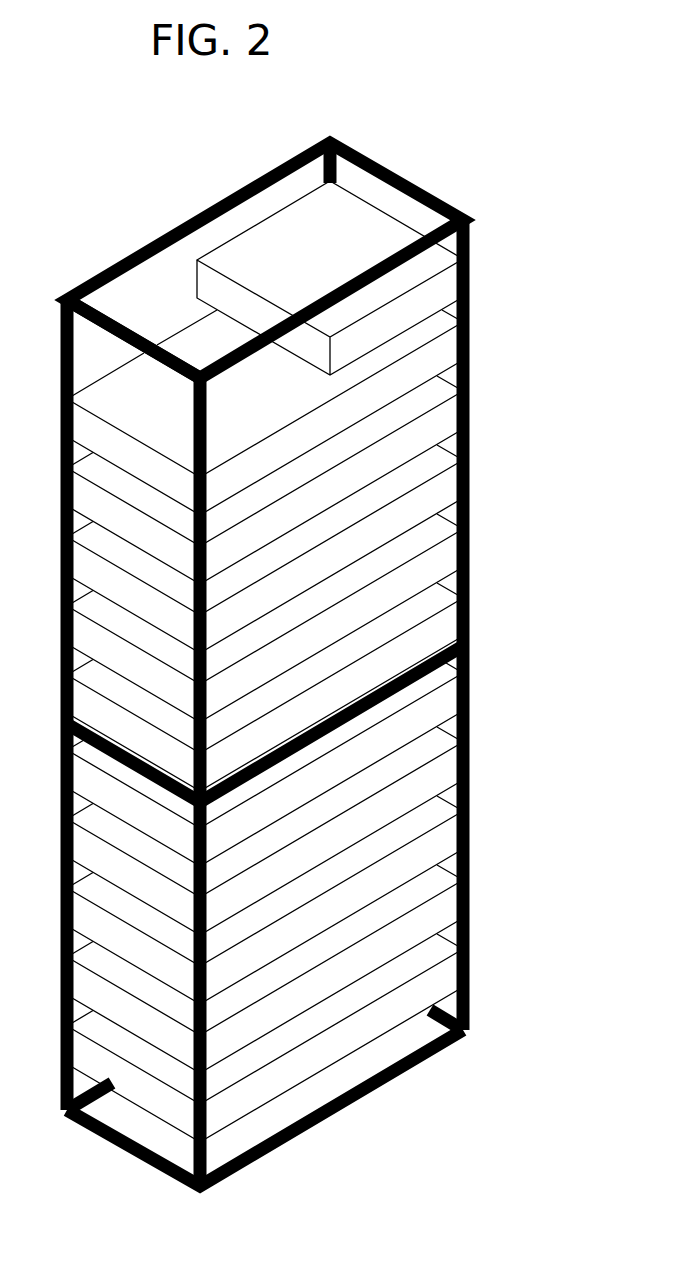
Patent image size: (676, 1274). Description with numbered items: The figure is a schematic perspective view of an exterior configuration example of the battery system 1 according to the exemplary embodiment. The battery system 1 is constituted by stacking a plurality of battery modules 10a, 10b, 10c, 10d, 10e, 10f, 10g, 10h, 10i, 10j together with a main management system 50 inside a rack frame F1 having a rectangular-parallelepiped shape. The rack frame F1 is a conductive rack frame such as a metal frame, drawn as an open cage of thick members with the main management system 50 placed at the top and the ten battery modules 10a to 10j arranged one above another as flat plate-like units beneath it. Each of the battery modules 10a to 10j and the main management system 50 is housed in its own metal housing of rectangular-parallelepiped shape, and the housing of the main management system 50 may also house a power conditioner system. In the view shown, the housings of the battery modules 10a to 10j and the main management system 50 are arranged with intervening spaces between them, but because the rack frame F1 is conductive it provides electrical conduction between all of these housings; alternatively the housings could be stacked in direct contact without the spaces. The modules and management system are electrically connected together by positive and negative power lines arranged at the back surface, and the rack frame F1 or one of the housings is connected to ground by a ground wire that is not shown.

The battery system 1 is at (265, 636).
The rack frame F1 is at (109, 274).
The main management system 50 is at (440, 281).
The battery module 10a is at (440, 347).
The battery module 10b is at (440, 415).
The battery module 10c is at (440, 483).
The battery module 10d is at (440, 550).
The battery module 10e is at (440, 618).
The battery module 10f is at (440, 699).
The battery module 10g is at (440, 768).
The battery module 10h is at (440, 836).
The battery module 10i is at (440, 904).
The battery module 10j is at (440, 970).